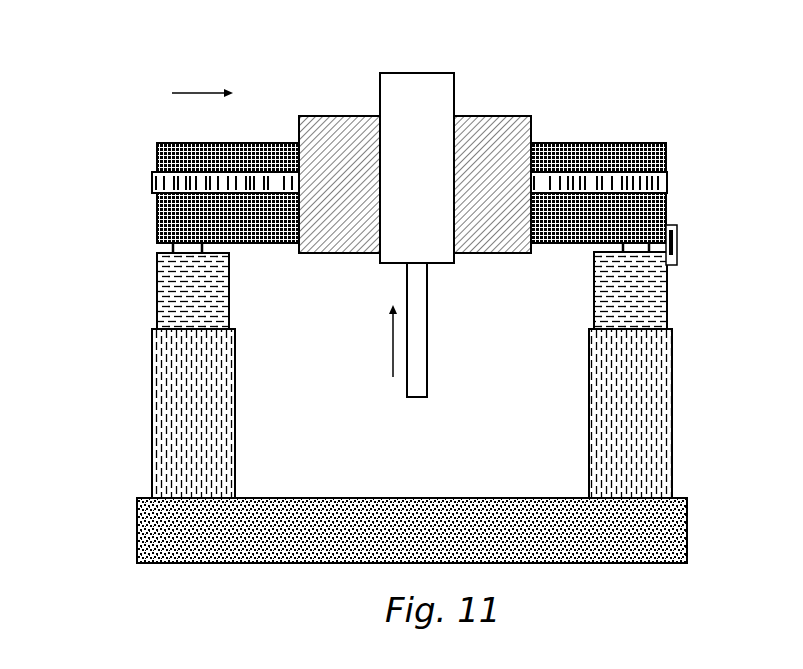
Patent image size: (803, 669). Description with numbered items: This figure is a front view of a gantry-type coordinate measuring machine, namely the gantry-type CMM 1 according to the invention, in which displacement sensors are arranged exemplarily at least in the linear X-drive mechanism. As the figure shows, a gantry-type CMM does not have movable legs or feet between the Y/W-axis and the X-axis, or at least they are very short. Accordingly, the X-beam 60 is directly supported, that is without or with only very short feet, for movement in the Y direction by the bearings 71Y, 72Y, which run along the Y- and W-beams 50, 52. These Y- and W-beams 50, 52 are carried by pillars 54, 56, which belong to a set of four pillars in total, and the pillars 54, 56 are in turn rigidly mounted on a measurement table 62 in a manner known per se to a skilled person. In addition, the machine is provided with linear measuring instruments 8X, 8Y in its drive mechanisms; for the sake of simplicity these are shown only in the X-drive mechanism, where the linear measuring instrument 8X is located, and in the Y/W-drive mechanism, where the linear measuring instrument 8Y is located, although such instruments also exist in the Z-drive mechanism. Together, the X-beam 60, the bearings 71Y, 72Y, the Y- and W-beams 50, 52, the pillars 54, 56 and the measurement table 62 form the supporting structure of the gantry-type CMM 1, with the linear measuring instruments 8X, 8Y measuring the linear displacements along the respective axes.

The gantry-type CMM 1 is at (398, 313).
The linear measuring instrument 8X is at (138, 174).
The linear measuring instrument 8Y is at (706, 258).
The X-beam 60 is at (444, 193).
The bearing 71Y is at (185, 249).
The bearing 72Y is at (584, 269).
The Y-beam 50 is at (597, 293).
The W-beam 52 is at (159, 293).
The pillar 54 is at (595, 413).
The pillar 56 is at (161, 413).
The measurement table 62 is at (412, 546).